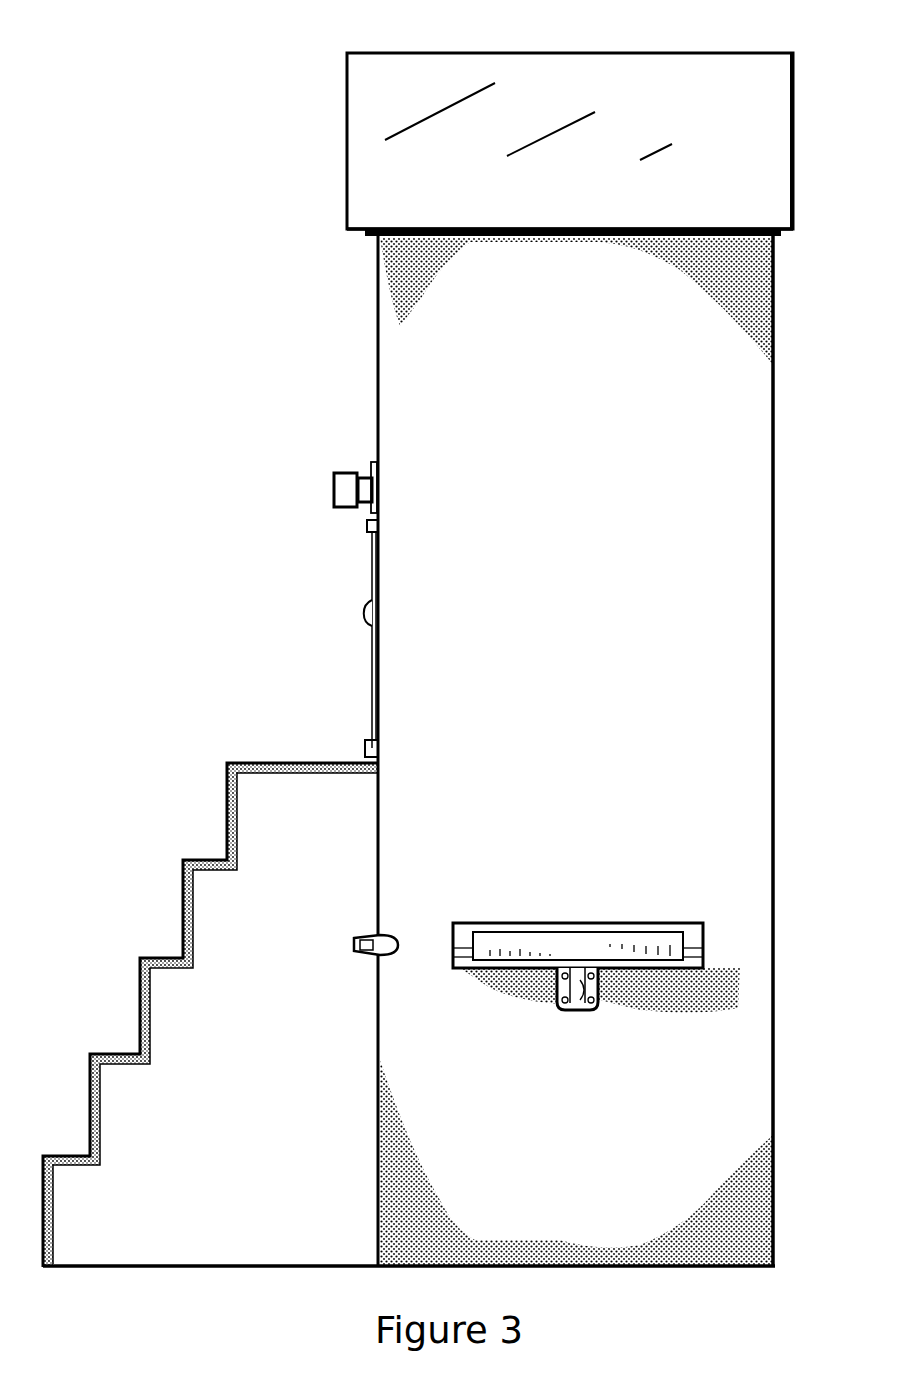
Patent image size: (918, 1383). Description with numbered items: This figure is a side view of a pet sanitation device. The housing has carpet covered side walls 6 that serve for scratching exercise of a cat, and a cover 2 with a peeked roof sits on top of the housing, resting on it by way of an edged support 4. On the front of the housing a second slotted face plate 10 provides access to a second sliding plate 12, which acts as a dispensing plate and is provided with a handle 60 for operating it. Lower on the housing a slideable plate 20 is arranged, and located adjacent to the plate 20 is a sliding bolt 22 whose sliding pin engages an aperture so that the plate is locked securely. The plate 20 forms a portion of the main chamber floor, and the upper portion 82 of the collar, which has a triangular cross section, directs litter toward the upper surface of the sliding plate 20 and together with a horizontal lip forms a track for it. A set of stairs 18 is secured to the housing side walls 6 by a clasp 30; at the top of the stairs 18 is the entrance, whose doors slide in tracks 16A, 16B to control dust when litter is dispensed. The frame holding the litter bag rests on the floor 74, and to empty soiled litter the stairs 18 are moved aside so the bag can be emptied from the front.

The cover 2 is at (615, 75).
The edged support 4 is at (365, 234).
The side walls 6 is at (393, 300).
The second slotted face plate 10 is at (373, 462).
The second sliding plate 12 is at (365, 489).
The track 16A is at (370, 526).
The track 16B is at (367, 743).
The stairs 18 is at (230, 822).
The slideable plate 20 is at (530, 945).
The sliding bolt 22 is at (592, 977).
The clasp 30 is at (397, 935).
The handle 60 is at (335, 488).
The floor 74 is at (380, 672).
The upper portion 82 is at (360, 603).